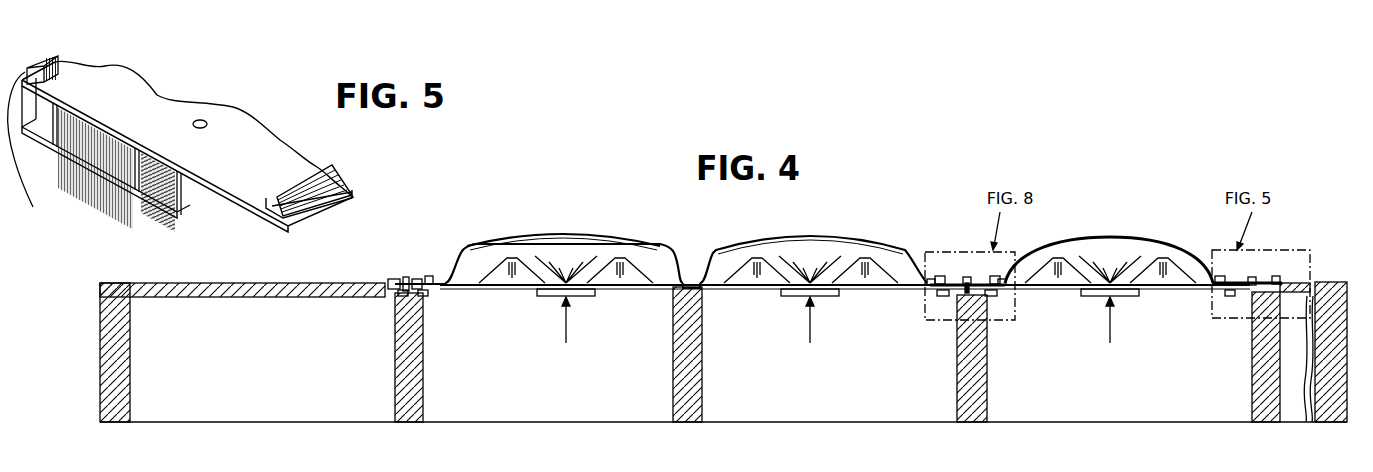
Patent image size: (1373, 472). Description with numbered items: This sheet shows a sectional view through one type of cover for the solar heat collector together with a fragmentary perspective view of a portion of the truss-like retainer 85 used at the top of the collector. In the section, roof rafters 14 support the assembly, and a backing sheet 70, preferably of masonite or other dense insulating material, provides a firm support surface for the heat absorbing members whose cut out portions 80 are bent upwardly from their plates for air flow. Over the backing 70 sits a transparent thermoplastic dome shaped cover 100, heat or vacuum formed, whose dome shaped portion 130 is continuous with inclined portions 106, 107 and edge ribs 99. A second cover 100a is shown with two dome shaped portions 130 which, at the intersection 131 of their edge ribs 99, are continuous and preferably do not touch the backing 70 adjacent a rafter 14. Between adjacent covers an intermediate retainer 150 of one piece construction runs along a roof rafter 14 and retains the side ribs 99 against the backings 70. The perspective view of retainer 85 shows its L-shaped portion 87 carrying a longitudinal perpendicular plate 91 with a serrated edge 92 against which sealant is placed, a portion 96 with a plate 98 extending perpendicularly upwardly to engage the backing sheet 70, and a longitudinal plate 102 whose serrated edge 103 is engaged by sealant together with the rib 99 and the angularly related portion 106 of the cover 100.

In FIG. 4, the roof rafter 14 is at (418, 328).
In FIG. 4, the backing sheet 70 is at (509, 290).
In FIG. 4, the cut out portions 80 is at (629, 262).
In FIG. 5, the retainer 85 is at (138, 125).
In FIG. 4, the retainer 85 is at (378, 263).
In FIG. 5, the L-shaped portion 87 is at (258, 155).
In FIG. 5, the perpendicular plate 91 is at (339, 171).
In FIG. 5, the serrated edge 92 is at (347, 187).
In FIG. 5, the portion of retainer 96 is at (95, 173).
In FIG. 5, the plate 98 is at (51, 148).
In FIG. 4, the edge rib 99 is at (938, 278).
In FIG. 4, the dome shaped cover 100 is at (1080, 238).
In FIG. 4, the cover 100a is at (498, 238).
In FIG. 5, the longitudinal plate 102 is at (58, 65).
In FIG. 5, the serrated edge 103 is at (35, 152).
In FIG. 4, the inclined portion 106 is at (424, 280).
In FIG. 4, the inclined portion 107 is at (441, 281).
In FIG. 4, the dome shaped portion 130 is at (595, 237).
In FIG. 4, the intersection 131 is at (684, 296).
In FIG. 4, the intermediate retainer 150 is at (951, 234).